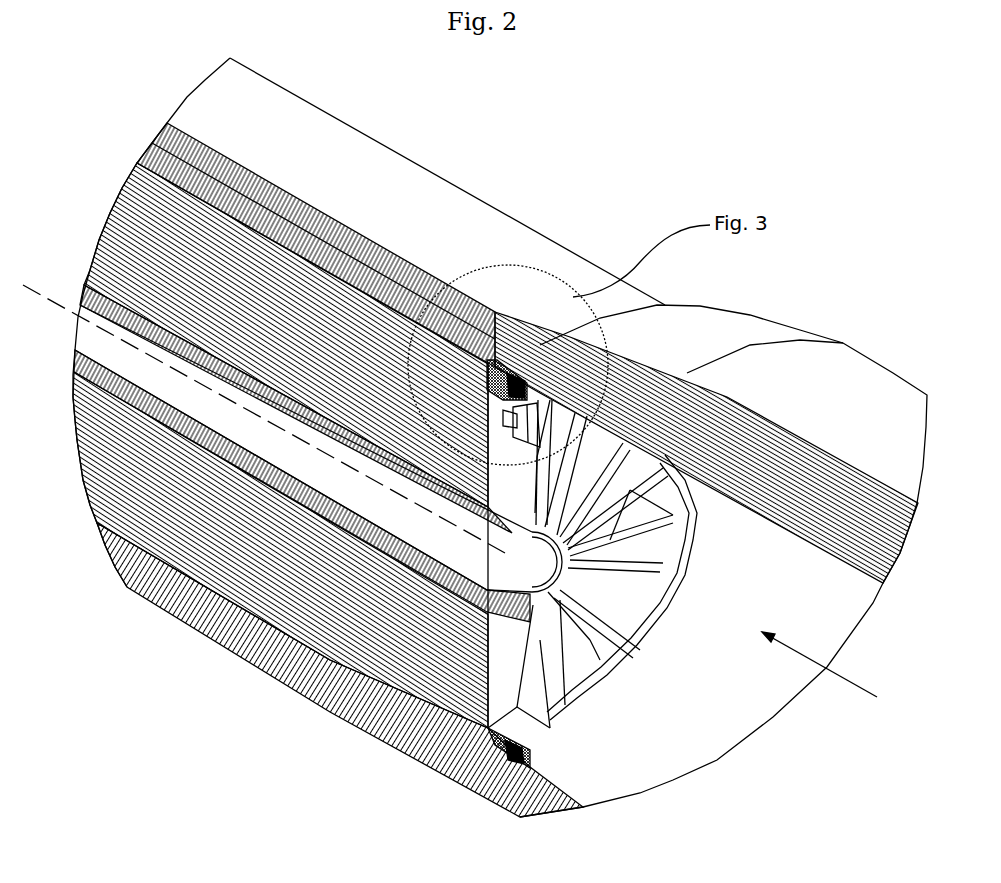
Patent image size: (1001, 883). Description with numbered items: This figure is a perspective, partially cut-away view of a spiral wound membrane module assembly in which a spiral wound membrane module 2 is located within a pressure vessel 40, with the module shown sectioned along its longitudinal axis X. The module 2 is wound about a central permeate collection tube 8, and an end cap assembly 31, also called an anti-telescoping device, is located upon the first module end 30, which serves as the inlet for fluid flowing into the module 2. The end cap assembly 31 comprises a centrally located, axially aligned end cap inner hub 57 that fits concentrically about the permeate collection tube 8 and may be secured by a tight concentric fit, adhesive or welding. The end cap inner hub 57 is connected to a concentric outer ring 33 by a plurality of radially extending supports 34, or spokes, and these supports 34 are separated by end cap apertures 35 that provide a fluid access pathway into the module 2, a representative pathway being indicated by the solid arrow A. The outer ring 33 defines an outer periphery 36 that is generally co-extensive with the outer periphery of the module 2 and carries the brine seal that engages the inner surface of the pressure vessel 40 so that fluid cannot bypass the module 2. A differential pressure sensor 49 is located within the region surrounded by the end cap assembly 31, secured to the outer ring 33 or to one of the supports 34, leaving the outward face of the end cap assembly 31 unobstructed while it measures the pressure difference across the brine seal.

The spiral wound membrane module 2 is at (70, 428).
The permeate collection tube 8 is at (110, 371).
The first module end 30 is at (490, 697).
The end cap assembly 31 is at (700, 533).
The concentric outer ring 33 is at (590, 610).
The radially extending supports 34 is at (553, 603).
The end cap apertures 35 is at (547, 687).
The outer periphery 36 is at (500, 745).
The pressure vessel 40 is at (437, 215).
The differential pressure sensor 49 is at (545, 418).
The end cap inner hub 57 is at (565, 553).
The longitudinal axis X is at (264, 406).
The solid arrow A is at (828, 673).